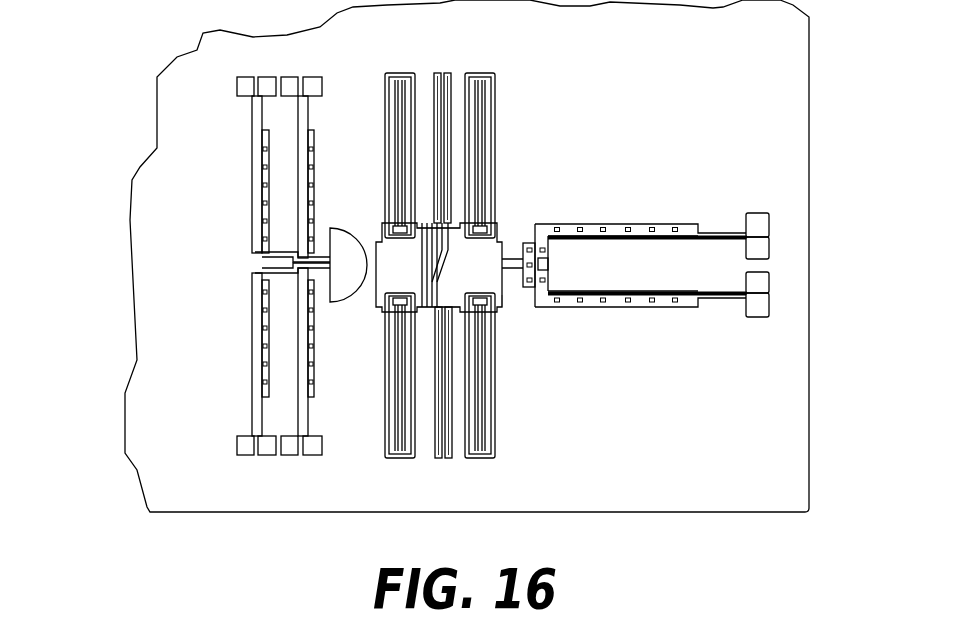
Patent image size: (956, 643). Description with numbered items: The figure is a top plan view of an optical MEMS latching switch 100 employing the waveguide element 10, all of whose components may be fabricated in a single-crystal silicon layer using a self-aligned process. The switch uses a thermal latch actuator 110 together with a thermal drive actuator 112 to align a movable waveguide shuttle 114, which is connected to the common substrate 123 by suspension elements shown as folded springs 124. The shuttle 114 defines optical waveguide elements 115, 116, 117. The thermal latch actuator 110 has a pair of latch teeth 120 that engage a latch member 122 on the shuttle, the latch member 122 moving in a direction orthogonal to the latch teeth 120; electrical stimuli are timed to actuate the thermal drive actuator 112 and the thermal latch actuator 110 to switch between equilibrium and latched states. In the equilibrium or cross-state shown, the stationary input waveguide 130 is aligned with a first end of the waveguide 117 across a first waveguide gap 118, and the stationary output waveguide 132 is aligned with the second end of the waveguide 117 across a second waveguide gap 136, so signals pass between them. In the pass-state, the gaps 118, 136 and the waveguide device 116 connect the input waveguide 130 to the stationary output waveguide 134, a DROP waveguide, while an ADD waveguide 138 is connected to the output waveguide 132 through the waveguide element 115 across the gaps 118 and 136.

The optical MEMS latching switch 100 is at (457, 256).
The common substrate 123 is at (797, 473).
The thermal drive actuator 112 is at (247, 365).
The folded springs 124 is at (385, 98).
The ADD waveguide 138 is at (435, 72).
The stationary input waveguide 130 is at (448, 72).
The stationary output waveguide 132 is at (435, 450).
The stationary output waveguide 134 is at (450, 450).
The waveguide shuttle 114 is at (503, 225).
The waveguide element 115 is at (432, 280).
The waveguide device 116 is at (423, 253).
The waveguide 117 is at (447, 260).
The first waveguide gap 118 is at (458, 223).
The second waveguide gap 136 is at (453, 310).
The waveguide element 10 is at (515, 298).
The latch member 122 is at (550, 263).
The latch teeth 120 is at (638, 225).
The thermal latch actuator 110 is at (637, 303).